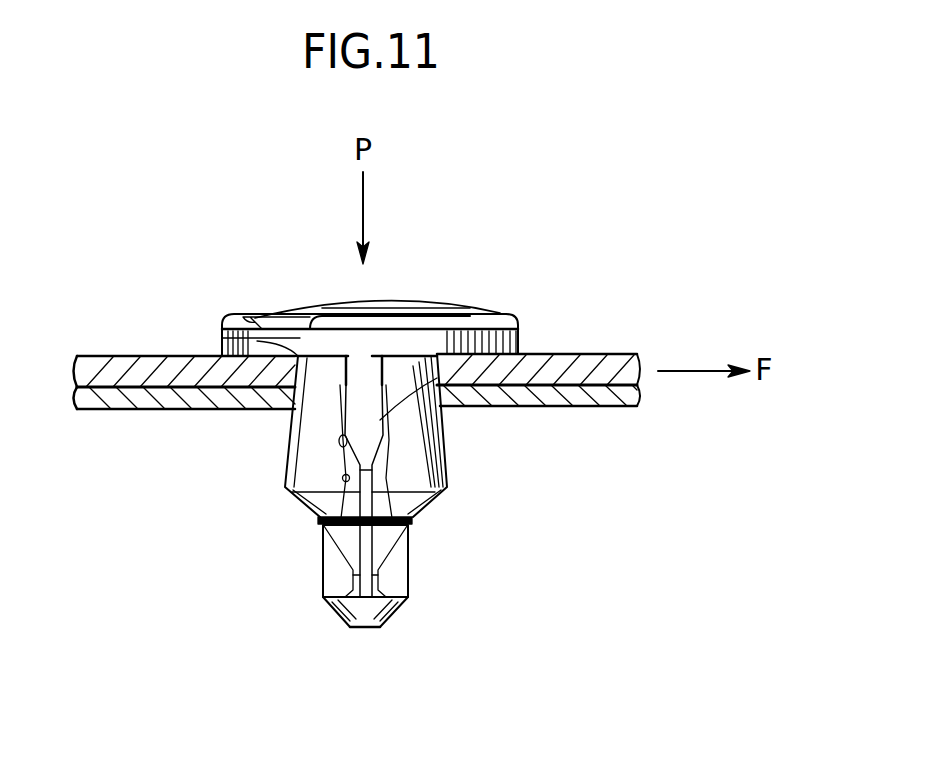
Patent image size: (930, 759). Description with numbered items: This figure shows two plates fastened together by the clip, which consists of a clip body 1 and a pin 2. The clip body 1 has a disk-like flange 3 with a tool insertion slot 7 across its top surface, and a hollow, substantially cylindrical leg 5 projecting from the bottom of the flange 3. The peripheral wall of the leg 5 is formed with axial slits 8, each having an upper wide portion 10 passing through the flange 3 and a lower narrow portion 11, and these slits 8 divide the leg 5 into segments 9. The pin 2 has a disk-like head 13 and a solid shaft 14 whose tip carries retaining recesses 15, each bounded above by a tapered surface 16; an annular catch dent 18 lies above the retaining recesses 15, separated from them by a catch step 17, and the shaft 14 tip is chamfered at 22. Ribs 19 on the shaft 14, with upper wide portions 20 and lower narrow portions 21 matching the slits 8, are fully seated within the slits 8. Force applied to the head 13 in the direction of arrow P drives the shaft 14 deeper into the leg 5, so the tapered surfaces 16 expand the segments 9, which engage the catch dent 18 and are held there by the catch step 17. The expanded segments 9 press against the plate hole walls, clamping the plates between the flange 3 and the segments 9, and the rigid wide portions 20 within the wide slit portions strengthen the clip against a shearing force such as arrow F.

The clip body 1 is at (256, 456).
The pin 2 is at (280, 622).
The flange 3 is at (490, 326).
The leg 5 is at (445, 442).
The tool insertion slot 7 is at (243, 318).
The slits 8 is at (538, 352).
The segments 9 is at (290, 446).
The upper wide portion 10 is at (340, 441).
The lower narrow portion 11 is at (322, 507).
The head 13 is at (283, 317).
The shaft 14 is at (398, 612).
The retaining recesses 15 is at (411, 593).
The tapered surface 16 is at (412, 555).
The catch step 17 is at (412, 528).
The catch dent 18 is at (443, 512).
The ribs 19 is at (447, 470).
The upper wide portions 20 is at (372, 354).
The lower narrow portions 21 is at (350, 552).
The chamfer 22 is at (368, 612).